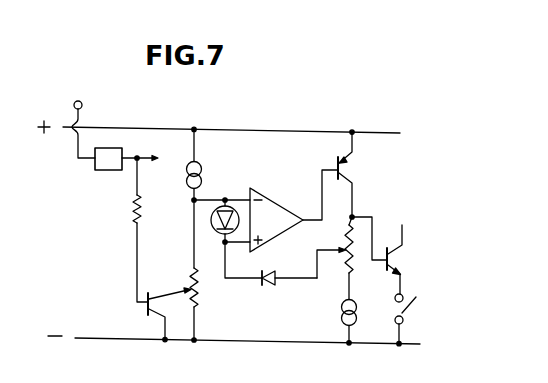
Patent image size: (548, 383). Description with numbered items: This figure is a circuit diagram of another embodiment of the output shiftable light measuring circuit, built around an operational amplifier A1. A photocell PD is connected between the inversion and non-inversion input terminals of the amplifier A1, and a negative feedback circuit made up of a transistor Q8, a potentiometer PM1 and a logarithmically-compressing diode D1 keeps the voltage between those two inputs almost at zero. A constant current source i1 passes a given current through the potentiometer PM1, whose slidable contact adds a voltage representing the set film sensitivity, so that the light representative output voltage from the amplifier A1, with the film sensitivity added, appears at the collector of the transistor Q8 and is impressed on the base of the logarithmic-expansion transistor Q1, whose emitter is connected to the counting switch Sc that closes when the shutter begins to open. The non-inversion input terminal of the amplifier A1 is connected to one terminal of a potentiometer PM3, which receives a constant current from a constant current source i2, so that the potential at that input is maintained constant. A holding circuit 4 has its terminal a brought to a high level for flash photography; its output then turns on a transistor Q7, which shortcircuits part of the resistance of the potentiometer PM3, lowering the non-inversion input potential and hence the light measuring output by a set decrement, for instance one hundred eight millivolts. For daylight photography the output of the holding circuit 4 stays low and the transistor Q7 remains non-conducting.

The terminal a is at (80, 101).
The holding circuit 4 is at (98, 167).
The transistor Q7 is at (170, 292).
The potentiometer PM3 is at (198, 283).
The constant current source i2 is at (203, 171).
The photocell PD is at (211, 220).
The operational amplifier A1 is at (276, 220).
The transistor Q8 is at (355, 170).
The potentiometer PM1 is at (354, 247).
The constant current source i1 is at (340, 323).
The logarithmically-compressing diode D1 is at (270, 286).
The expansion transistor Q1 is at (395, 257).
The counting switch Sc is at (413, 304).